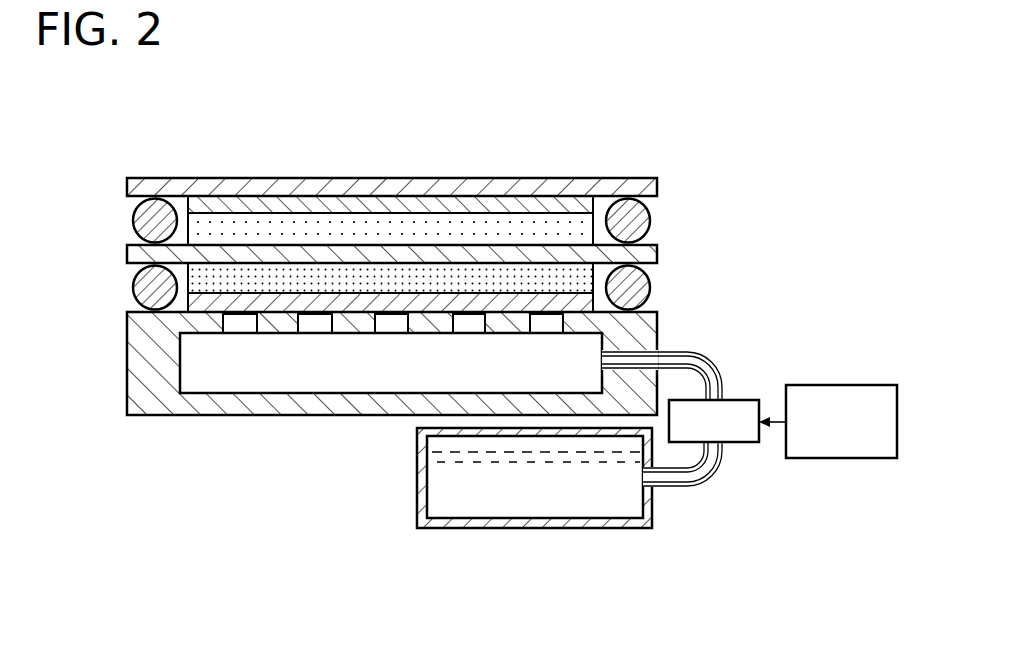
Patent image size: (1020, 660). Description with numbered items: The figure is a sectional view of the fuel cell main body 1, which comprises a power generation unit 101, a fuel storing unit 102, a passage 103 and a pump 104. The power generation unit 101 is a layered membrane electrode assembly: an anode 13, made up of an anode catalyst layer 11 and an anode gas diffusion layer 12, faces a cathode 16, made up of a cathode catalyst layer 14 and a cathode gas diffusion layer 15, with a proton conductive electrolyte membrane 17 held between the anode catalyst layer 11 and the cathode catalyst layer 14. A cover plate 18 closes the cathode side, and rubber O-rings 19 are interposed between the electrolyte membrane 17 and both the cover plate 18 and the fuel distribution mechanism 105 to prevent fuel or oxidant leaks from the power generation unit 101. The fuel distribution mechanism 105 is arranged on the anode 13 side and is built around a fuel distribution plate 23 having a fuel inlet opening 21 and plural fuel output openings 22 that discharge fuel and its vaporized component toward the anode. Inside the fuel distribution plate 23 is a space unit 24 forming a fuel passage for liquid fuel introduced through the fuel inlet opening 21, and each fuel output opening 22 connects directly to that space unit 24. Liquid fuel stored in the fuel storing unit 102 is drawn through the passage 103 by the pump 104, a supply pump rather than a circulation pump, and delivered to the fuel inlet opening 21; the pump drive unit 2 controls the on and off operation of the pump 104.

The fuel cell main body 1 is at (654, 149).
The pump drive unit 2 is at (851, 385).
The anode catalyst layer 11 is at (585, 278).
The anode gas diffusion layer 12 is at (585, 304).
The anode 13 is at (710, 268).
The cathode catalyst layer 14 is at (585, 231).
The cathode gas diffusion layer 15 is at (585, 206).
The cathode 16 is at (710, 197).
The electrolyte membrane 17 is at (658, 258).
The cover plate 18 is at (463, 177).
The O-ring 19 is at (133, 221).
The fuel inlet opening 21 is at (641, 348).
The fuel output openings 22 is at (240, 323).
The fuel distribution plate 23 is at (138, 355).
The space unit 24 is at (381, 385).
The power generation unit 101 is at (761, 208).
The fuel storing unit 102 is at (655, 516).
The passage 103 is at (712, 472).
The pump 104 is at (728, 396).
The fuel distribution mechanism 105 is at (75, 315).